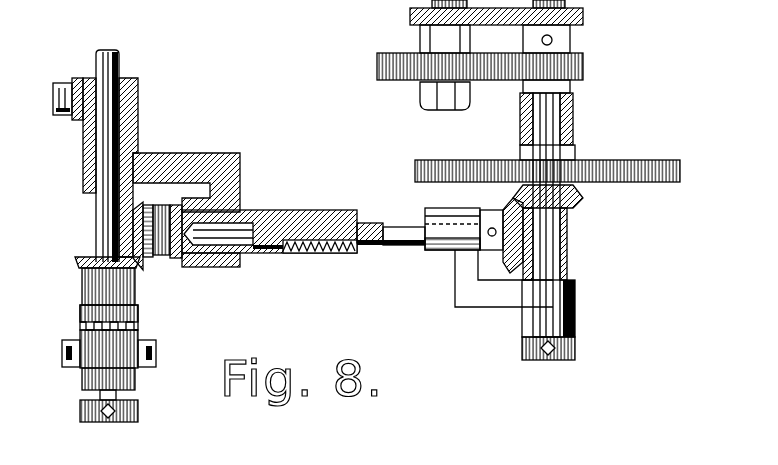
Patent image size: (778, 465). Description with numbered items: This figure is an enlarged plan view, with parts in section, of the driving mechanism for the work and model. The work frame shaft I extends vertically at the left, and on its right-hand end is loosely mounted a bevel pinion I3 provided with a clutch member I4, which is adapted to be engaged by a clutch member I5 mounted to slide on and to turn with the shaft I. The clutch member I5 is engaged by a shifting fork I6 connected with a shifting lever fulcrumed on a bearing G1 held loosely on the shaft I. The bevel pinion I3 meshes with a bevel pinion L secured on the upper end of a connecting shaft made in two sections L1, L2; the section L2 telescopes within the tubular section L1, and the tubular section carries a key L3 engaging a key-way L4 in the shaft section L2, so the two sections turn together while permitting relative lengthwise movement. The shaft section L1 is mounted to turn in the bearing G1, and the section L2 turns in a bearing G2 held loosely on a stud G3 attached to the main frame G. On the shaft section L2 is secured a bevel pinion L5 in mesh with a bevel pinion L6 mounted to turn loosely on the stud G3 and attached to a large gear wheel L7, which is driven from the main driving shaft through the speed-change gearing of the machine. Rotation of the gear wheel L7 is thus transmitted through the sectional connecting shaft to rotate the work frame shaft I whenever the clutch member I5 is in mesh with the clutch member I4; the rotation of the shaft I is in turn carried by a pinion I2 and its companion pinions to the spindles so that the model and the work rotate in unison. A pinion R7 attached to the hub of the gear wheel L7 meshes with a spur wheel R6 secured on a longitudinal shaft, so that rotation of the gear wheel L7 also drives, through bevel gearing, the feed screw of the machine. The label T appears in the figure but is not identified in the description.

The work frame shaft I is at (117, 55).
The frame T is at (60, 69).
The pinion I2 is at (78, 122).
The bearing G1 is at (137, 146).
The bevel pinion L is at (150, 202).
The tubular shaft section L1 is at (256, 252).
The shaft section L2 is at (398, 230).
The key L3 is at (314, 254).
The key-way L4 is at (370, 245).
The bevel pinion L5 is at (508, 208).
The bevel pinion L6 is at (584, 200).
The large gear wheel L7 is at (667, 172).
The main frame G is at (584, 16).
The bearing G2 is at (484, 306).
The stud G3 is at (566, 252).
The spur wheel R6 is at (380, 81).
The pinion R7 is at (584, 70).
The bevel pinion I3 is at (78, 262).
The clutch member I4 is at (80, 318).
The clutch member I5 is at (133, 337).
The shifting fork I6 is at (64, 356).